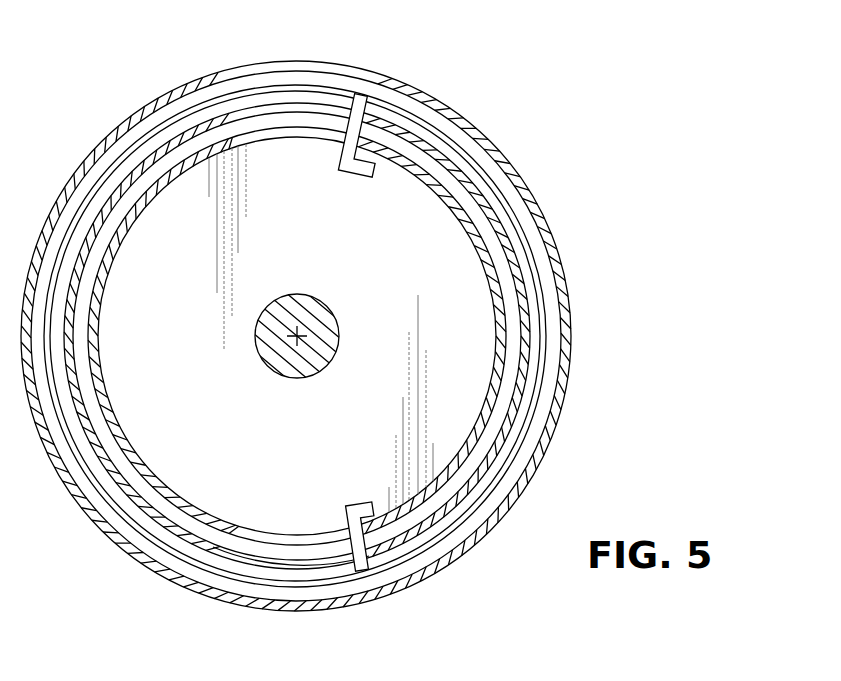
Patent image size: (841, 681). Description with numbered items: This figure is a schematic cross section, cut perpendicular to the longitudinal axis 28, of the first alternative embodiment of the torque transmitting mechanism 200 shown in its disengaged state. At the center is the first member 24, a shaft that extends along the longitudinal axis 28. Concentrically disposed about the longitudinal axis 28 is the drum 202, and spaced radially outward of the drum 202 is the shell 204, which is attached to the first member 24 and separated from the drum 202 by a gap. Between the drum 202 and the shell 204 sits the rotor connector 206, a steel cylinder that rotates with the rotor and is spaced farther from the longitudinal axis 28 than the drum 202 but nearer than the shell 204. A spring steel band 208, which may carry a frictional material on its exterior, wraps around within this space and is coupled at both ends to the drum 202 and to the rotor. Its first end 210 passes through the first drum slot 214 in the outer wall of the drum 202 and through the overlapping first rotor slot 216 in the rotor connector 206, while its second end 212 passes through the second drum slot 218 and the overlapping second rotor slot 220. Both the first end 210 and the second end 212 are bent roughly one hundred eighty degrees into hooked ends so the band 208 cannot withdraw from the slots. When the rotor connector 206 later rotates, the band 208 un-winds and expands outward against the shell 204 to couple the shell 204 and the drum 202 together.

The torque transmitting mechanism 200 is at (548, 79).
The drum 202 is at (447, 191).
The shell 204 is at (510, 163).
The rotor connector 206 is at (526, 381).
The band 208 is at (569, 330).
The first end 210 is at (349, 174).
The second end 212 is at (356, 501).
The first drum slot 214 is at (231, 145).
The first rotor slot 216 is at (232, 122).
The second drum slot 218 is at (240, 526).
The second rotor slot 220 is at (242, 560).
The first member 24 is at (331, 322).
The longitudinal axis 28 is at (272, 358).